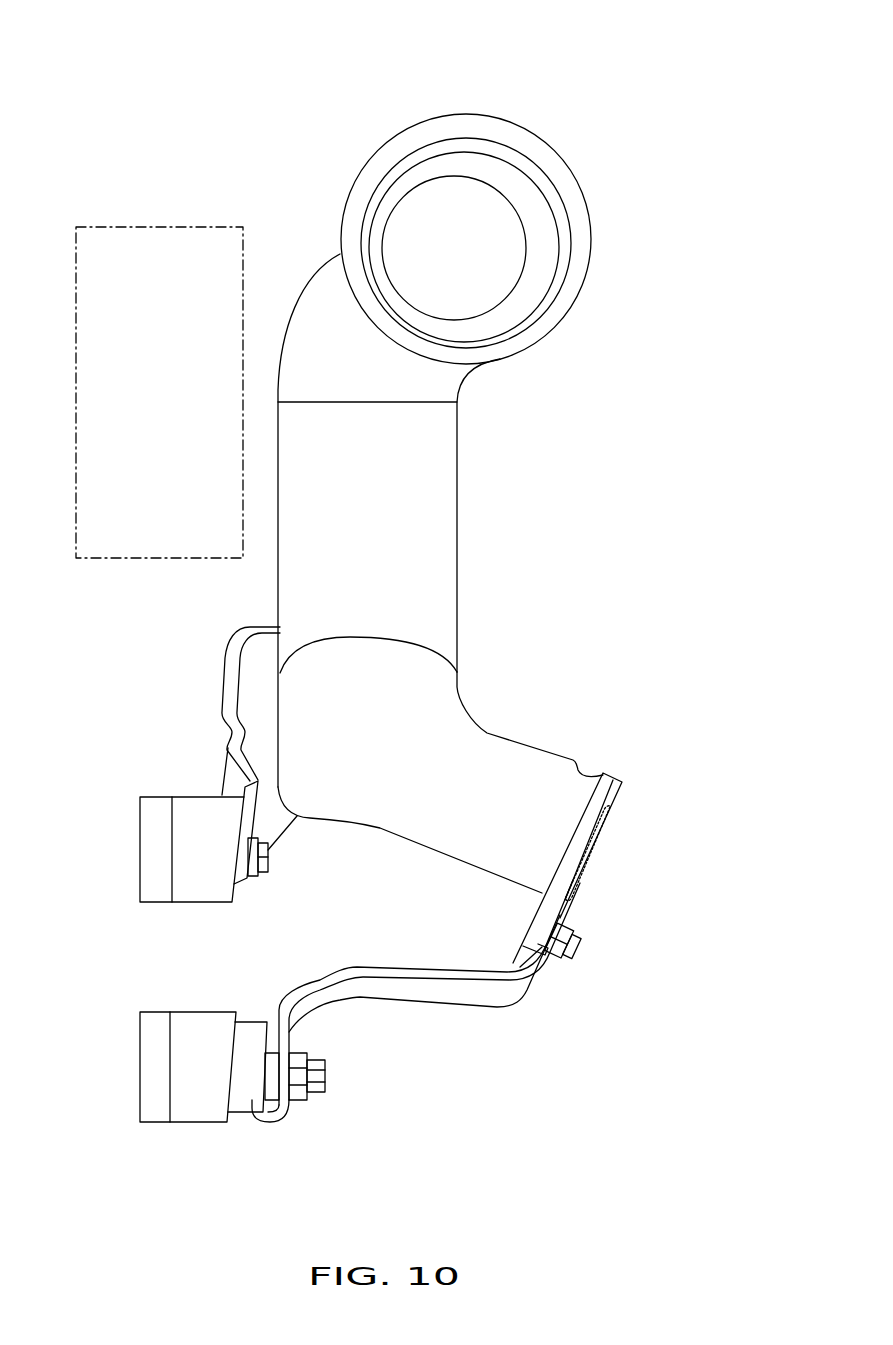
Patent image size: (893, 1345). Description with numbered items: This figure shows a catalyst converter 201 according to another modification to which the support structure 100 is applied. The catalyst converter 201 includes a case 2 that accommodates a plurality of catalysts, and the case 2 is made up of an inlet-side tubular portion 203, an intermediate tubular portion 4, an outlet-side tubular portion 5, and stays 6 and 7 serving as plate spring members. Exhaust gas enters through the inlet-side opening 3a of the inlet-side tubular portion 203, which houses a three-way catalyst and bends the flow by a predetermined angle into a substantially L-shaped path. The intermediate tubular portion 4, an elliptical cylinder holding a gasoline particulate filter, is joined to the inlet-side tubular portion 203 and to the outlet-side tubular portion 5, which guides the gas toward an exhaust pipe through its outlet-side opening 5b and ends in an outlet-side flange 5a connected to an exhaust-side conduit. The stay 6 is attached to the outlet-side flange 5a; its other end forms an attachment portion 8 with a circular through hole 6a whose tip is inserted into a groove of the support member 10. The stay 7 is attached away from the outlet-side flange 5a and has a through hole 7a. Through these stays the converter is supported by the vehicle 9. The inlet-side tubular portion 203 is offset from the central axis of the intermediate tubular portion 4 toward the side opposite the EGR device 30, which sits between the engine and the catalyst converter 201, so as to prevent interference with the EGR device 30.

The support structure 100 is at (177, 90).
The case 2 is at (623, 163).
The catalyst converter 201 is at (338, 133).
The inlet-side tubular portion 203 is at (592, 252).
The inlet-side opening 3a is at (545, 288).
The intermediate tubular portion 4 is at (458, 516).
The outlet-side tubular portion 5 is at (488, 730).
The outlet-side flange 5a is at (628, 785).
The outlet-side opening 5b is at (598, 843).
The stay 7 is at (270, 820).
The through hole 7a is at (253, 878).
The vehicle 9 is at (203, 865).
The stay 6 is at (345, 1000).
The through hole 6a is at (270, 1118).
The attachment portion 8 is at (283, 1113).
The support member 10 is at (297, 1113).
The EGR device 30 is at (153, 226).